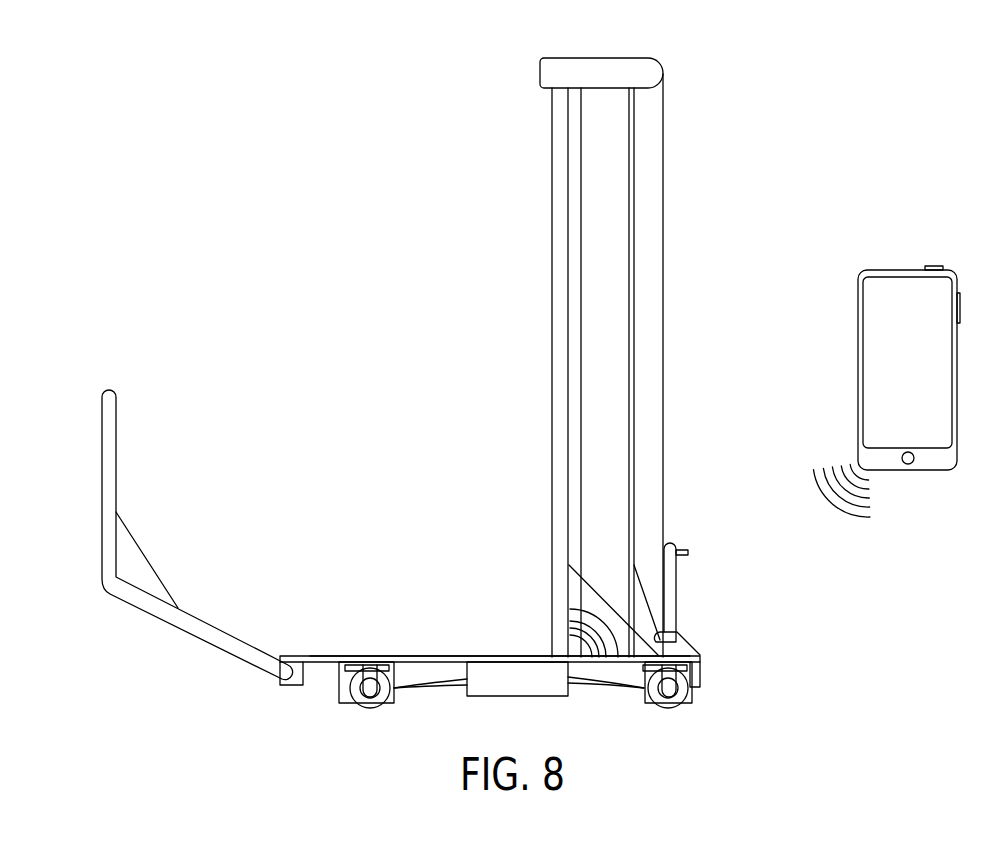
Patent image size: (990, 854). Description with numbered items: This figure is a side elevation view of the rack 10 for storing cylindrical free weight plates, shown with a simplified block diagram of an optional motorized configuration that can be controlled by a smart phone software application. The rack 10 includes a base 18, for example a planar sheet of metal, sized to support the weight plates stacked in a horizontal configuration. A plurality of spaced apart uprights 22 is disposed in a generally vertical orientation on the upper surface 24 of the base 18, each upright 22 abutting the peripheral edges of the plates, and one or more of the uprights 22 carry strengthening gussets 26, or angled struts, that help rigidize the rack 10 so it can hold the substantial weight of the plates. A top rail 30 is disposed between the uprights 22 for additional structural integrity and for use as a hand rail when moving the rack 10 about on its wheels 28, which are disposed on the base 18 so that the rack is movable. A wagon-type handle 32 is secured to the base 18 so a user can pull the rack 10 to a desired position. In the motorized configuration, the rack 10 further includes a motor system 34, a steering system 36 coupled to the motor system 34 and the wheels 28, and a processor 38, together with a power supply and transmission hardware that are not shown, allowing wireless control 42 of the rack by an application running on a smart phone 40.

The rack 10 is at (678, 43).
The base 18 is at (320, 656).
The uprights 22 is at (562, 452).
The upper surface 24 is at (393, 656).
The strengthening gussets 26 is at (648, 605).
The wheels 28 is at (370, 706).
The top rail 30 is at (652, 72).
The handle 32 is at (112, 402).
The motor system 34 is at (395, 675).
The steering system 36 is at (350, 677).
The processor 38 is at (558, 697).
The smart phone 40 is at (935, 455).
The wireless control 42 is at (593, 620).